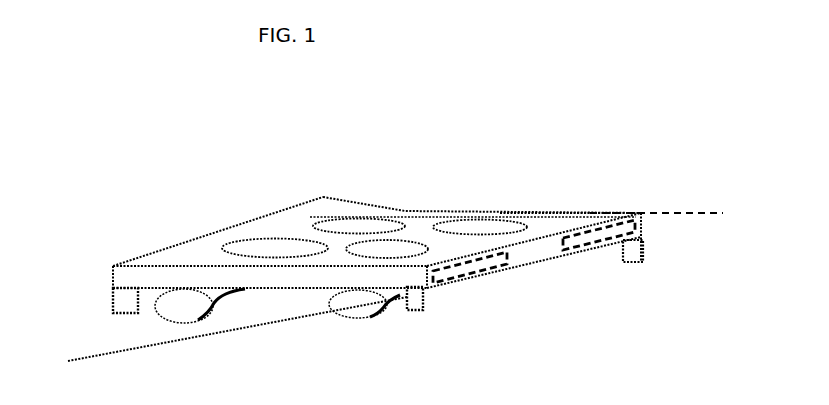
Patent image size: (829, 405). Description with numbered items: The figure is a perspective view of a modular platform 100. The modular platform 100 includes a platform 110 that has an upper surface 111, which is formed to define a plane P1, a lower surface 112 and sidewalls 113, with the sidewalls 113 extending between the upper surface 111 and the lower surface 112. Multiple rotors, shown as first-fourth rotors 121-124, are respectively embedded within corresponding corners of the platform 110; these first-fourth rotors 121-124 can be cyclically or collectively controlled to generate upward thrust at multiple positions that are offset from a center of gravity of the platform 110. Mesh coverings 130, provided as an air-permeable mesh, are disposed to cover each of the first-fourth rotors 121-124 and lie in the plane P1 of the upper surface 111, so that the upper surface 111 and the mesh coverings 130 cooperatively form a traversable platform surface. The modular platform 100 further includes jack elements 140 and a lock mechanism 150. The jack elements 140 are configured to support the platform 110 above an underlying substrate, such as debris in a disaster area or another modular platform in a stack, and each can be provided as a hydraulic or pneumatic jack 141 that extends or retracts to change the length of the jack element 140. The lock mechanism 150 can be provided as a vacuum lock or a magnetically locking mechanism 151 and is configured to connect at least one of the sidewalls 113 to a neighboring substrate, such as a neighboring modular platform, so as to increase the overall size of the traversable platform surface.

The modular platform 100 is at (118, 278).
The platform 110 is at (532, 258).
The upper surface 111 is at (571, 213).
The plane P1 is at (677, 213).
The lower surface 112 is at (522, 268).
The sidewalls 113 is at (642, 226).
The mesh coverings 130 is at (243, 247).
The first-fourth rotors 121-124 is at (490, 224).
The jack elements 140 is at (122, 302).
The hydraulic or pneumatic jack 141 is at (423, 310).
The lock mechanism 150 is at (395, 298).
The vacuum lock or magnetically locking mechanism 151 is at (183, 310).